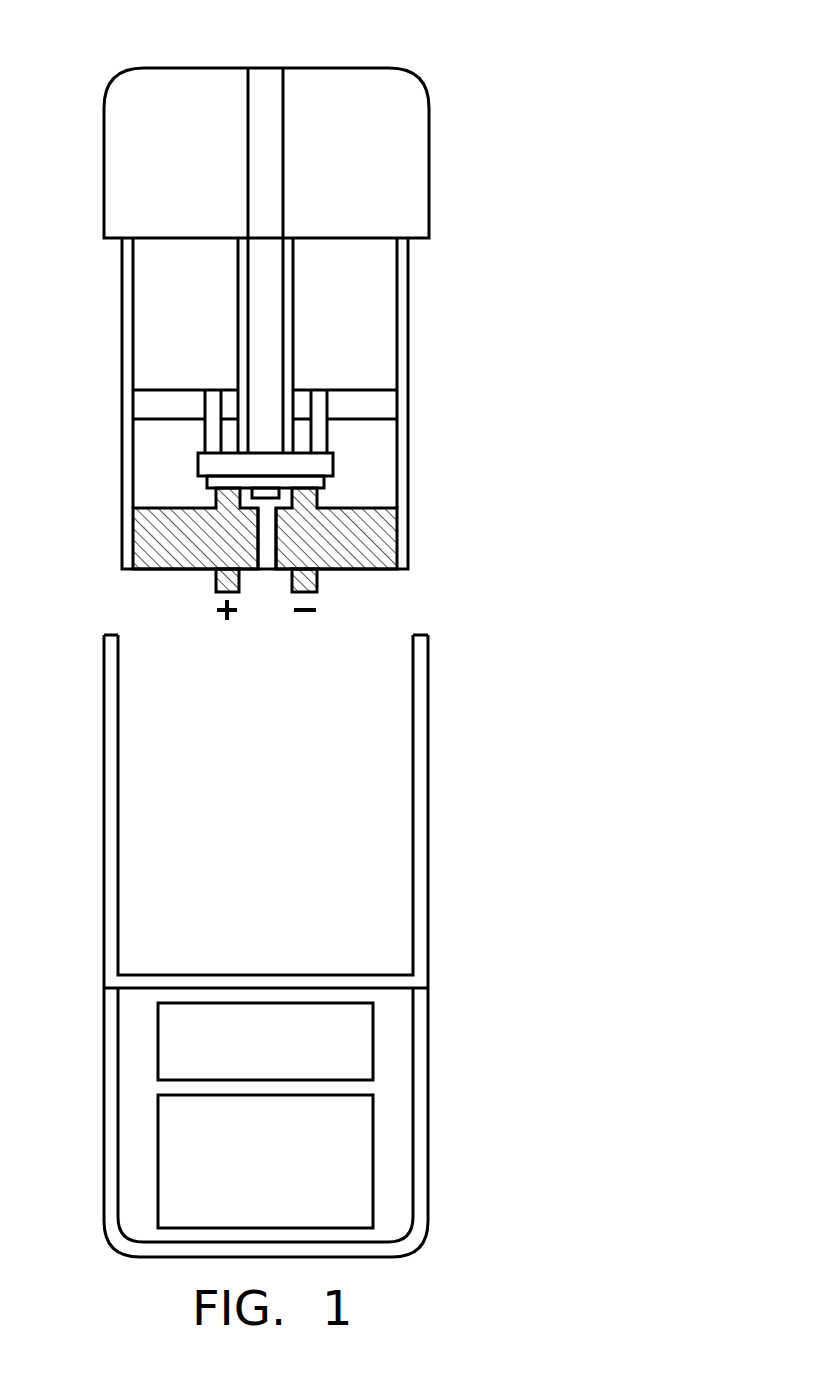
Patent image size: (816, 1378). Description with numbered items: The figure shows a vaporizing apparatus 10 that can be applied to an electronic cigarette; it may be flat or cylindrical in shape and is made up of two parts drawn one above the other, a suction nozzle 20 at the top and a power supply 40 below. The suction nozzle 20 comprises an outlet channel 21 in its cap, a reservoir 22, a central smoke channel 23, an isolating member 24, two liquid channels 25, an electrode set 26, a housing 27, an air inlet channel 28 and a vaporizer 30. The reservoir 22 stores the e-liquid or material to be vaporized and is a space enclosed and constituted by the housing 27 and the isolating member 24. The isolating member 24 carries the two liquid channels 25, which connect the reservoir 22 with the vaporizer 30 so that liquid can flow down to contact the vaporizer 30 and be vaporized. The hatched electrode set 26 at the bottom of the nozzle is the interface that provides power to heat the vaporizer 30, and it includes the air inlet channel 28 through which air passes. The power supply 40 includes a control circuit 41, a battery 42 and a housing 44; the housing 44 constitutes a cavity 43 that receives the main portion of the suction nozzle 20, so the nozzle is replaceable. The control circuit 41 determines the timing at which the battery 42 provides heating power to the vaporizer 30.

The vaporizing apparatus 10 is at (583, 78).
The suction nozzle 20 is at (470, 172).
The outlet channel 21 is at (263, 80).
The reservoir 22 is at (373, 273).
The smoke channel 23 is at (267, 320).
The isolating member 24 is at (373, 403).
The liquid channels 25 is at (330, 437).
The electrode set 26 is at (380, 543).
The housing 27 is at (122, 331).
The air inlet channel 28 is at (265, 541).
The vaporizer 30 is at (333, 467).
The power supply 40 is at (470, 718).
The control circuit 41 is at (333, 1045).
The battery 42 is at (333, 1175).
The cavity 43 is at (393, 810).
The housing 44 is at (104, 810).